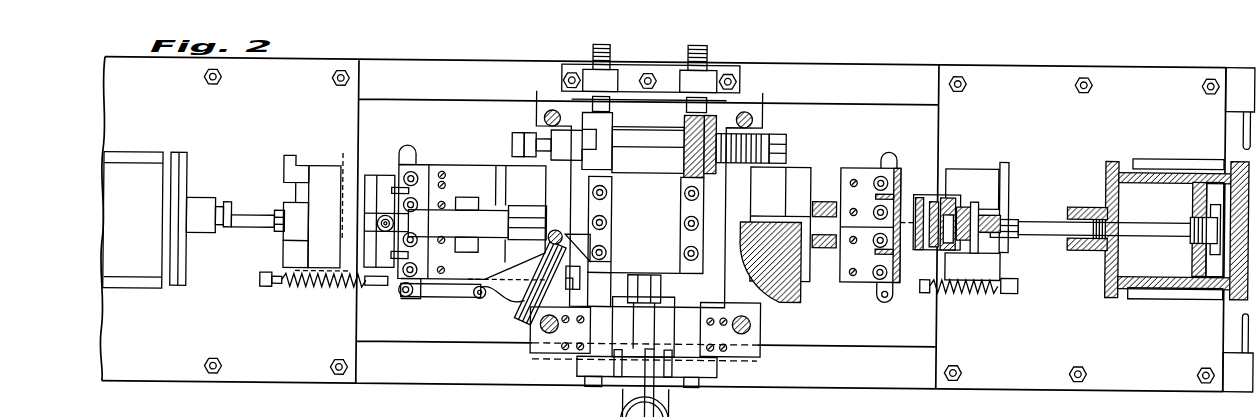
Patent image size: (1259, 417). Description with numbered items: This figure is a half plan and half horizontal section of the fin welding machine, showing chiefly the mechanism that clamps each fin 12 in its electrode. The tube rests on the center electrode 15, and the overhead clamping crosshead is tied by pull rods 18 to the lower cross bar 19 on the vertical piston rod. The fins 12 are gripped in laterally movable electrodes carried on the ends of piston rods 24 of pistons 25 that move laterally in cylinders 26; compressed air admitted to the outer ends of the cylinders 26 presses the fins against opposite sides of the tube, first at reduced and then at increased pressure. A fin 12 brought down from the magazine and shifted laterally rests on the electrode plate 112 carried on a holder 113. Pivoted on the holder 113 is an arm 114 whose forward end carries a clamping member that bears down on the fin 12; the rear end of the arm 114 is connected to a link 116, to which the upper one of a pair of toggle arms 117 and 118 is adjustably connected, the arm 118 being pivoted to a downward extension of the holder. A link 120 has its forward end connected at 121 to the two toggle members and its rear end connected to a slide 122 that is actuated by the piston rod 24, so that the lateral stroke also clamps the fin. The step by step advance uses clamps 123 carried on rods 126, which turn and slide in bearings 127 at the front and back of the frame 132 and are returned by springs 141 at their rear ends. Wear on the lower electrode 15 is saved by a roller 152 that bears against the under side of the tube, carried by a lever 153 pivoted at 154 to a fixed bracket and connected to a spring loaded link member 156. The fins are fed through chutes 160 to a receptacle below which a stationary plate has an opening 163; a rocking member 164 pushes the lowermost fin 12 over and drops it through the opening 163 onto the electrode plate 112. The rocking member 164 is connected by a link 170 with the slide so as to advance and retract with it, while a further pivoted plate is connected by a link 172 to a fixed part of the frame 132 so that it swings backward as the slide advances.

The fin 12 is at (753, 217).
The center electrode 15 is at (649, 199).
The pull rod 18 is at (545, 115).
The lower cross bar 19 is at (610, 333).
The piston rod 24 is at (245, 218).
The piston 25 is at (1194, 244).
The cylinder 26 is at (122, 177).
The electrode plate 112 is at (517, 170).
The holder 113 is at (497, 198).
The arm 114 is at (477, 225).
The link 116 is at (370, 212).
The toggle arm 117 is at (352, 226).
The toggle arm 118 is at (873, 267).
The link 120 is at (322, 218).
The connection 121 is at (932, 153).
The slide 122 is at (300, 221).
The clamp 123 is at (670, 141).
The rod 126 is at (597, 384).
The bearing 127 is at (687, 73).
The frame 132 is at (818, 66).
The spring 141 is at (610, 73).
The roller 152 is at (658, 286).
The lever 153 is at (655, 296).
The pivot 154 is at (572, 372).
The link member 156 is at (662, 408).
The chute 160 is at (536, 307).
The opening 163 is at (591, 283).
The rocking member 164 is at (523, 283).
The link 170 is at (447, 295).
The link 172 is at (390, 285).